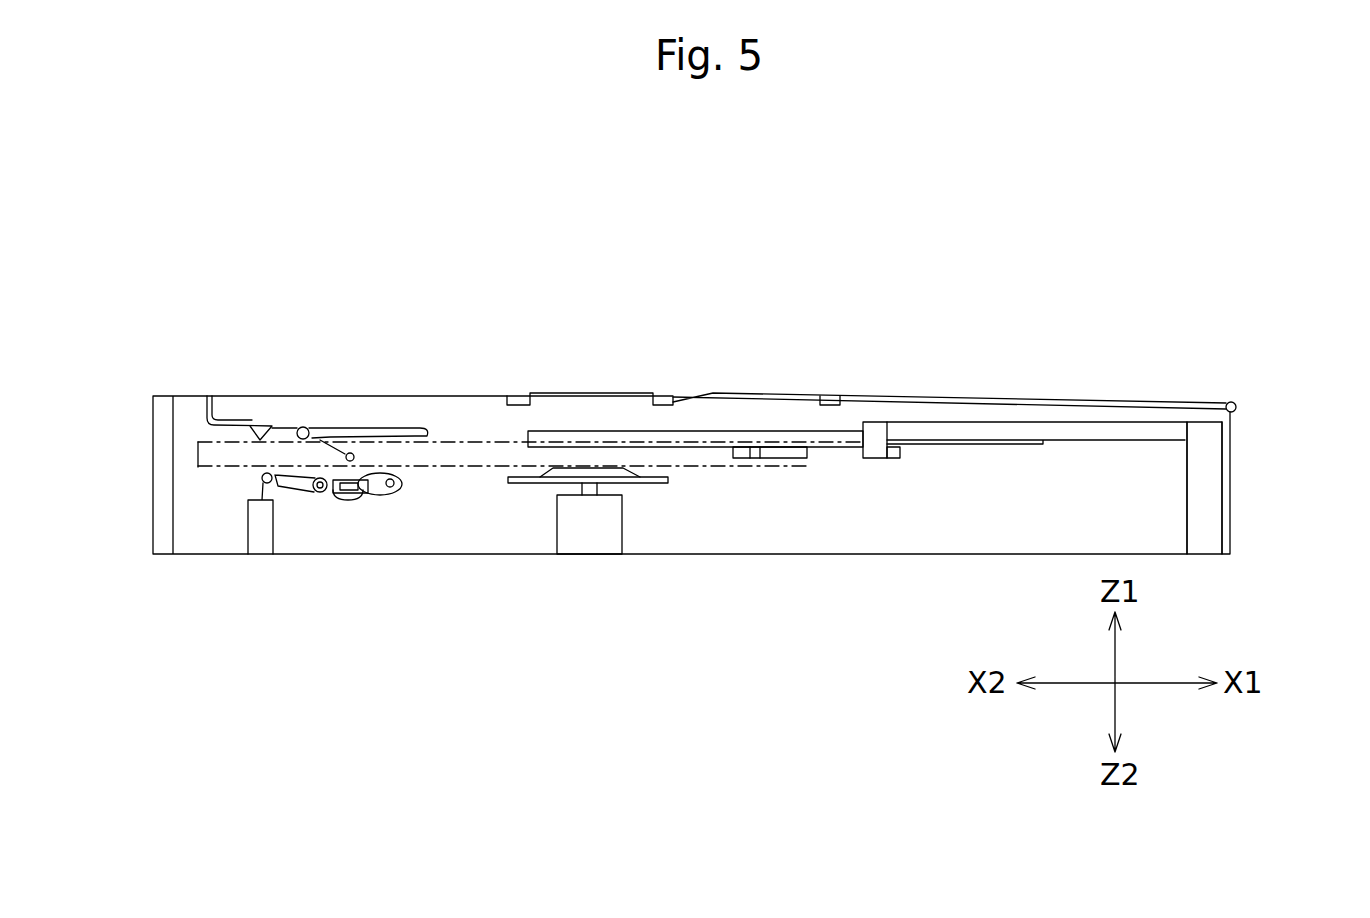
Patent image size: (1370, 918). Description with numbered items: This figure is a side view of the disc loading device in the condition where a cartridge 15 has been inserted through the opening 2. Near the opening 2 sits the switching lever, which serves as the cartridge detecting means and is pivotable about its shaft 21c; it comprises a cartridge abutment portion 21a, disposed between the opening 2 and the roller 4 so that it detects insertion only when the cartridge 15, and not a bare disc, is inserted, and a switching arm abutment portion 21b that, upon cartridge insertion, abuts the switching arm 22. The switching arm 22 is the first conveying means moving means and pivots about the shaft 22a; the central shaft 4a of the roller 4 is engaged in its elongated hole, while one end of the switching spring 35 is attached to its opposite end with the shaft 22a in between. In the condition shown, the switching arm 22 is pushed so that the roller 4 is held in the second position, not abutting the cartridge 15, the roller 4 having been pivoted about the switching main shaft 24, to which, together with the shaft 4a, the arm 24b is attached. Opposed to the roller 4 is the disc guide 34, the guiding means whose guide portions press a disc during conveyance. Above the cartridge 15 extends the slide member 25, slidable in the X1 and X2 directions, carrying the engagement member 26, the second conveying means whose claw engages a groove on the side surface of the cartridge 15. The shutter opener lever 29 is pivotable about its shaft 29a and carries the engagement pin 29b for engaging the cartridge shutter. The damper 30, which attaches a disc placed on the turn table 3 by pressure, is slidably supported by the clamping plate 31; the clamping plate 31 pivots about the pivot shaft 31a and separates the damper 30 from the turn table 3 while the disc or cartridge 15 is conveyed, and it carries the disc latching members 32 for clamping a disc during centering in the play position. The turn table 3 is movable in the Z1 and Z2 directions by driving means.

The opening 2 is at (153, 413).
The turn table 3 is at (660, 483).
The roller 4 is at (345, 499).
The central shaft of the roller 4a is at (340, 493).
The cartridge 15 is at (466, 435).
The cartridge abutment portion 21a is at (257, 430).
The switching arm abutment portion 21b is at (350, 453).
The shaft 21c is at (303, 427).
The switching arm 22 is at (300, 483).
The shaft 22a is at (320, 492).
The switching main shaft 24 is at (397, 492).
The arm 24b is at (378, 490).
The slide member 25 is at (724, 431).
The engagement member 26 is at (840, 450).
The shutter opener lever 29 is at (1098, 424).
The shaft 29a is at (1205, 515).
The engagement pin 29b is at (878, 424).
The damper 30 is at (597, 400).
The clamping plate 31 is at (1015, 400).
The pivot shaft 31a is at (1233, 402).
The disc latching members 32 is at (833, 404).
The disc guide 34 is at (382, 428).
The switching spring 35 is at (260, 488).